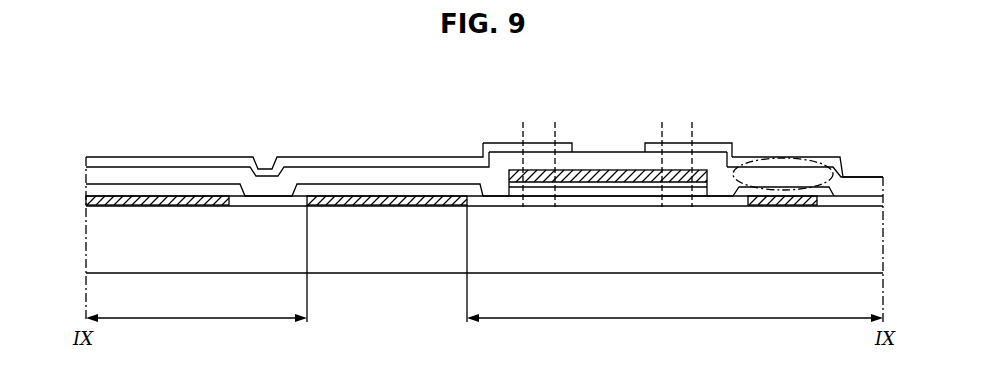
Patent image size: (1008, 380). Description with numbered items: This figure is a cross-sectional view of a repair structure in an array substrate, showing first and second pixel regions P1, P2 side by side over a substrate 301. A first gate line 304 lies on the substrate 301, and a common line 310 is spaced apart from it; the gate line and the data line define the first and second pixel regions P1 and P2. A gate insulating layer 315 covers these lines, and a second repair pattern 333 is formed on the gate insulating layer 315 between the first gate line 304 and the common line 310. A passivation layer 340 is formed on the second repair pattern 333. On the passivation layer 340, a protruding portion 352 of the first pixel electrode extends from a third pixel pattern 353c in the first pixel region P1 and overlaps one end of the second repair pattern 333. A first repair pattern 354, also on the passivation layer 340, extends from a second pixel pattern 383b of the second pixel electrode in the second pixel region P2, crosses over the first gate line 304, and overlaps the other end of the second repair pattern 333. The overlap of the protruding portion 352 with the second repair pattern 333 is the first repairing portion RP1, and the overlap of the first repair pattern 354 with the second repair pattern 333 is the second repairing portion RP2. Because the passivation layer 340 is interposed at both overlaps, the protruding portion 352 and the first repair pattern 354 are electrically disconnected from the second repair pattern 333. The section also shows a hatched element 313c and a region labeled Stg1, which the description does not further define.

The substrate 301 is at (858, 251).
The gate insulating layer 315 is at (553, 207).
The gate electrode 313c is at (164, 206).
The first gate line 304 is at (375, 206).
The common line 310 is at (781, 206).
The storage capacitor Stg1 is at (738, 200).
The passivation layer 340 is at (392, 173).
The second repair pattern 333 is at (598, 172).
The second pixel pattern 383b is at (172, 160).
The first repair pattern 354 is at (507, 148).
The protruding portion 352 is at (715, 148).
The third pixel pattern 353c is at (795, 158).
The second repairing portion RP2 is at (541, 124).
The first repairing portion RP1 is at (679, 124).
The second pixel region P2 is at (196, 309).
The first pixel region P1 is at (675, 309).